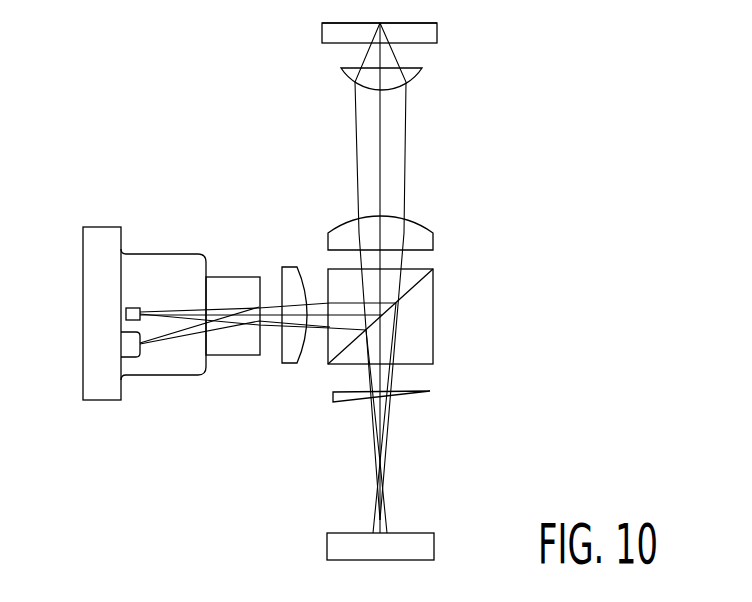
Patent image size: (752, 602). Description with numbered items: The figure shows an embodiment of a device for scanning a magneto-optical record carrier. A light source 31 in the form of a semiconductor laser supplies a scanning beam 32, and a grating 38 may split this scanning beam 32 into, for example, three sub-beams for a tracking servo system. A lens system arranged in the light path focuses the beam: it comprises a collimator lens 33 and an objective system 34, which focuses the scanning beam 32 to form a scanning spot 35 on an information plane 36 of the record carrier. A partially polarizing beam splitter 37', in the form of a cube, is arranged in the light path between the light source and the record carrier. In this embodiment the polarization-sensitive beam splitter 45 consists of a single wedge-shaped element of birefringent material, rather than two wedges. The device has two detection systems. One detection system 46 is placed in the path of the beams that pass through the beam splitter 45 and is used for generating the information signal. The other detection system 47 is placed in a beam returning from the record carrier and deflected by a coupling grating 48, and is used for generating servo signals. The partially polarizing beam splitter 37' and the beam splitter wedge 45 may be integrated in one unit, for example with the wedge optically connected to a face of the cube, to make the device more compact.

The light source 31 is at (126, 313).
The scanning beam 32 is at (168, 312).
The collimator lens 33 is at (434, 236).
The objective system 34 is at (422, 70).
The scanning spot 35 is at (378, 23).
The information plane 36 is at (433, 24).
The partially polarizing beam splitter 37' is at (417, 316).
The grating 38 is at (205, 310).
The polarization-sensitive beam splitter 45 is at (430, 391).
The detection system 46 is at (400, 536).
The detection system 47 is at (124, 344).
The coupling grating 48 is at (262, 308).